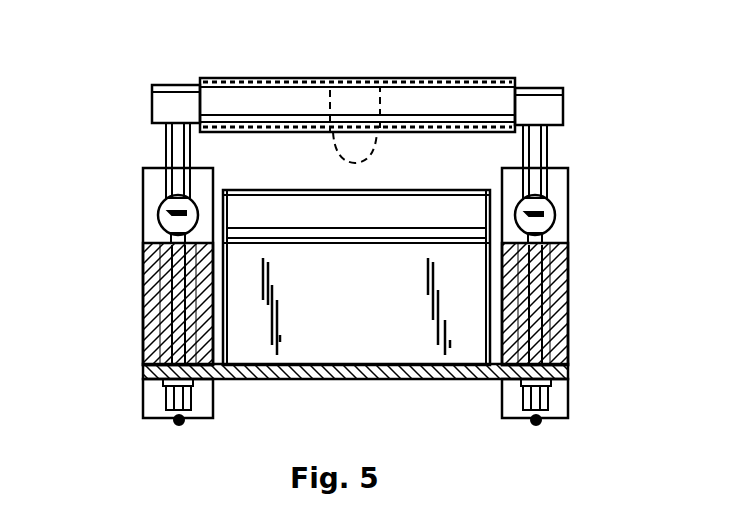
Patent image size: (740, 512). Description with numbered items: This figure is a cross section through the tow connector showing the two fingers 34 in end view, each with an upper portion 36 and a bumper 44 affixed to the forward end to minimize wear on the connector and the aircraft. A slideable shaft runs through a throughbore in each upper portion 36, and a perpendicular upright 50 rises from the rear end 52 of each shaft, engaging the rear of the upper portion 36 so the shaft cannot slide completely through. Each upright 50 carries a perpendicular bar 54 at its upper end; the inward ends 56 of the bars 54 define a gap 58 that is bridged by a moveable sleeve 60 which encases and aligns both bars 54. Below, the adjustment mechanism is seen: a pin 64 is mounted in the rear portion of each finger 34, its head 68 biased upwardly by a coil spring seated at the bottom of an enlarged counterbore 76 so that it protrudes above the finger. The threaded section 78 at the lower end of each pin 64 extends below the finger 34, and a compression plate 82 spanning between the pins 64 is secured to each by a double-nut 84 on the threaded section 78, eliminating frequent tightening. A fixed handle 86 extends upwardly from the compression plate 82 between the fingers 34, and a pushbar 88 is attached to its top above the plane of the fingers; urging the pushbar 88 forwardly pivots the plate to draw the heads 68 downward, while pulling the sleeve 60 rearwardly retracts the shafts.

The finger 34 is at (150, 343).
The upper portion 36 is at (150, 188).
The bumper 44 is at (213, 414).
The upright 50 is at (190, 152).
The rear end 52 is at (159, 211).
The bar 54 is at (160, 101).
The inward end 56 is at (355, 154).
The gap 58 is at (368, 86).
The moveable sleeve 60 is at (470, 78).
The pin 64 is at (150, 305).
The head 68 is at (160, 236).
The counterbore 76 is at (145, 273).
The threaded section 78 is at (174, 421).
The compression plate 82 is at (361, 372).
The double-nut 84 is at (163, 386).
The fixed handle 86 is at (376, 310).
The pushbar 88 is at (412, 206).